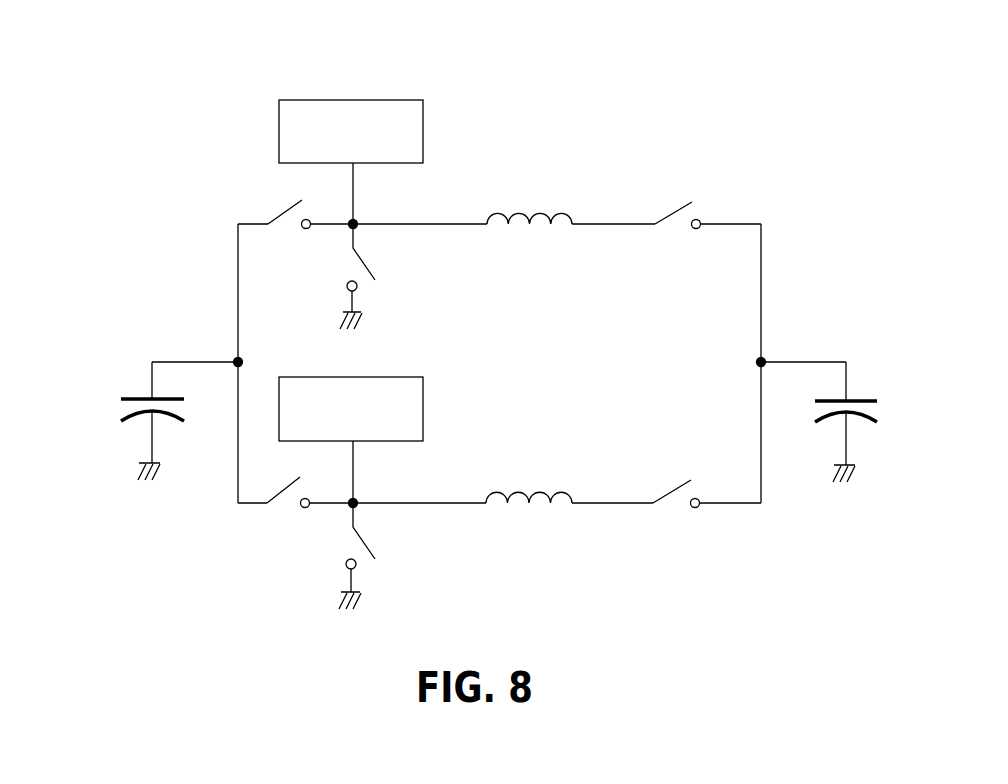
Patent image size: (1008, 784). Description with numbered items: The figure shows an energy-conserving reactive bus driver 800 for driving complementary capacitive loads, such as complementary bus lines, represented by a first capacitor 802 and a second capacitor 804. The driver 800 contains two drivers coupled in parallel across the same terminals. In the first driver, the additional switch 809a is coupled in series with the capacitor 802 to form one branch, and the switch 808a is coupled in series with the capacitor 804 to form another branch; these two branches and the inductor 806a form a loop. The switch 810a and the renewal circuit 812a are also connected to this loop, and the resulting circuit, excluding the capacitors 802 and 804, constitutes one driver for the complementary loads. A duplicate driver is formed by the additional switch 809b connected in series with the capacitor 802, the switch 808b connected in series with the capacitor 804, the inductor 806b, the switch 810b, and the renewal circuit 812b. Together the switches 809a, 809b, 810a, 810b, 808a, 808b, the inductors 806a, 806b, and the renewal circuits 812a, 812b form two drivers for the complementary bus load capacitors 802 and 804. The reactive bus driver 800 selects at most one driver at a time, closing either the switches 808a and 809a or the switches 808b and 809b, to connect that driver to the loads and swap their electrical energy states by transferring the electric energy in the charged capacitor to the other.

The reactive bus driver 800 is at (708, 173).
The first capacitor 802 is at (132, 395).
The second capacitor 804 is at (863, 397).
The inductor 806a is at (518, 213).
The inductor 806b is at (517, 492).
The switch 808a is at (670, 212).
The switch 808b is at (669, 492).
The additional switch 809a is at (285, 213).
The additional switch 809b is at (283, 517).
The switch 810a is at (373, 274).
The switch 810b is at (368, 547).
The renewal circuit 812a is at (330, 98).
The renewal circuit 812b is at (423, 397).